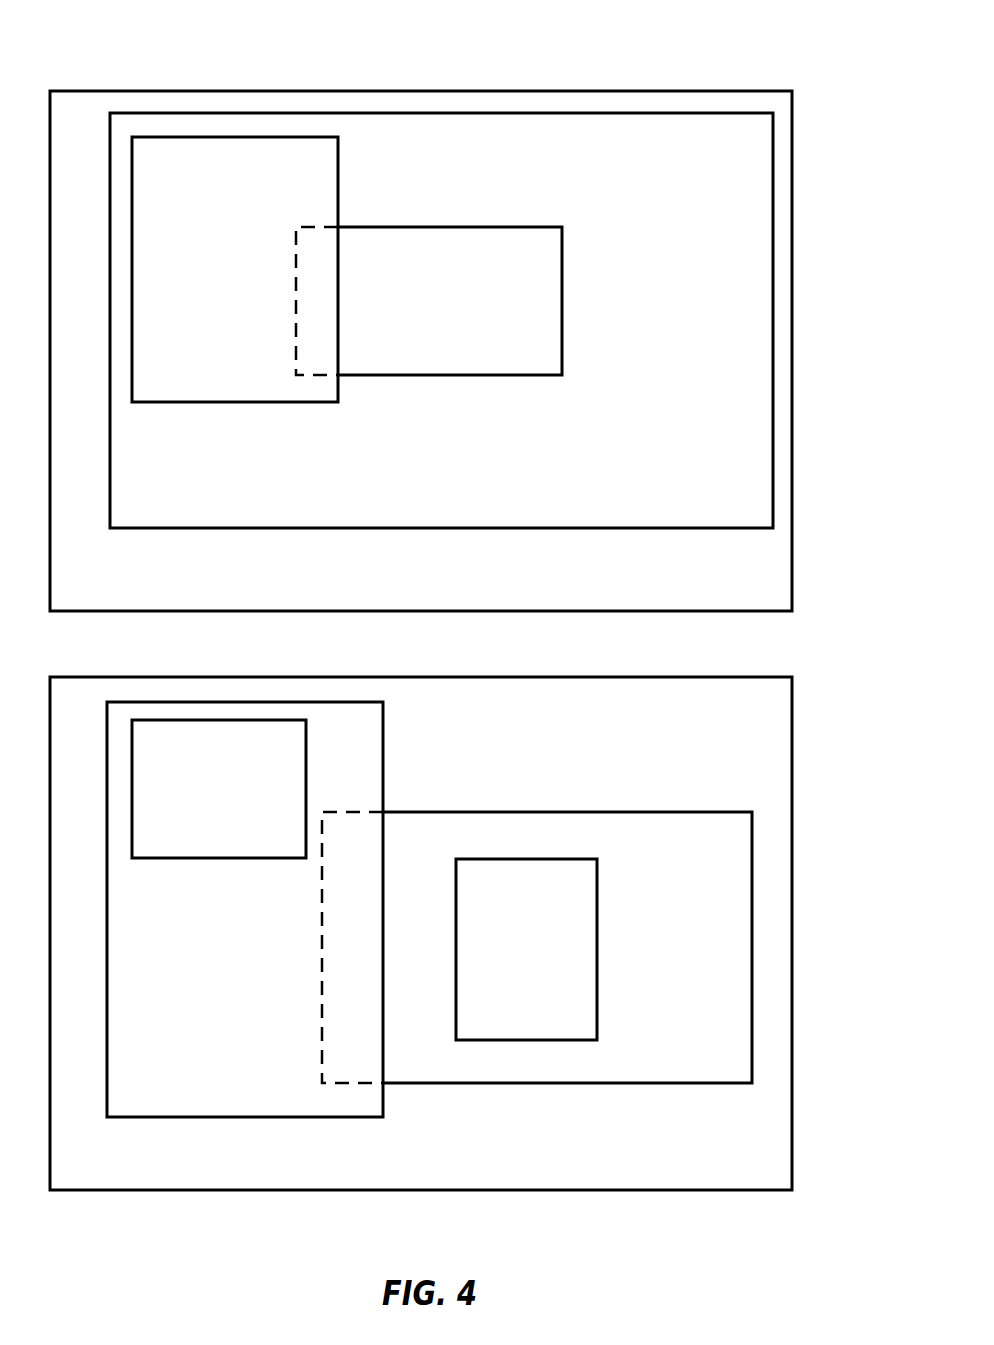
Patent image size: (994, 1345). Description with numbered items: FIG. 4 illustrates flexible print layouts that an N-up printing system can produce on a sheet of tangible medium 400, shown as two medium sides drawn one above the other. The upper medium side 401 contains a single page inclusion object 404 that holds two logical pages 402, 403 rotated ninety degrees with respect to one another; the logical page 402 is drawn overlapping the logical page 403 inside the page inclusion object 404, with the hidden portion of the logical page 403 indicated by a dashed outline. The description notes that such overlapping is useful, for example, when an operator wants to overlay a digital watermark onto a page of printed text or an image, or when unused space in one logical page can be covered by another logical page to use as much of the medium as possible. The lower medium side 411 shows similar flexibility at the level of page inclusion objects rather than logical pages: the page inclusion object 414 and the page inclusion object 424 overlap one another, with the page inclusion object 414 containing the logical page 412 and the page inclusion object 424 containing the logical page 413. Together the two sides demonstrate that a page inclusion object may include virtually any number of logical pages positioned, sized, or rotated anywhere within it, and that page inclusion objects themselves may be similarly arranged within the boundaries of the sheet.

The sheet of tangible medium 400 is at (708, 50).
The medium side 401 is at (248, 598).
The logical page 402 is at (254, 244).
The logical page 403 is at (527, 312).
The page inclusion object 404 is at (692, 512).
The medium side 411 is at (248, 1174).
The logical page 412 is at (287, 800).
The logical page 413 is at (546, 1002).
The page inclusion object 414 is at (242, 1037).
The page inclusion object 424 is at (707, 1004).